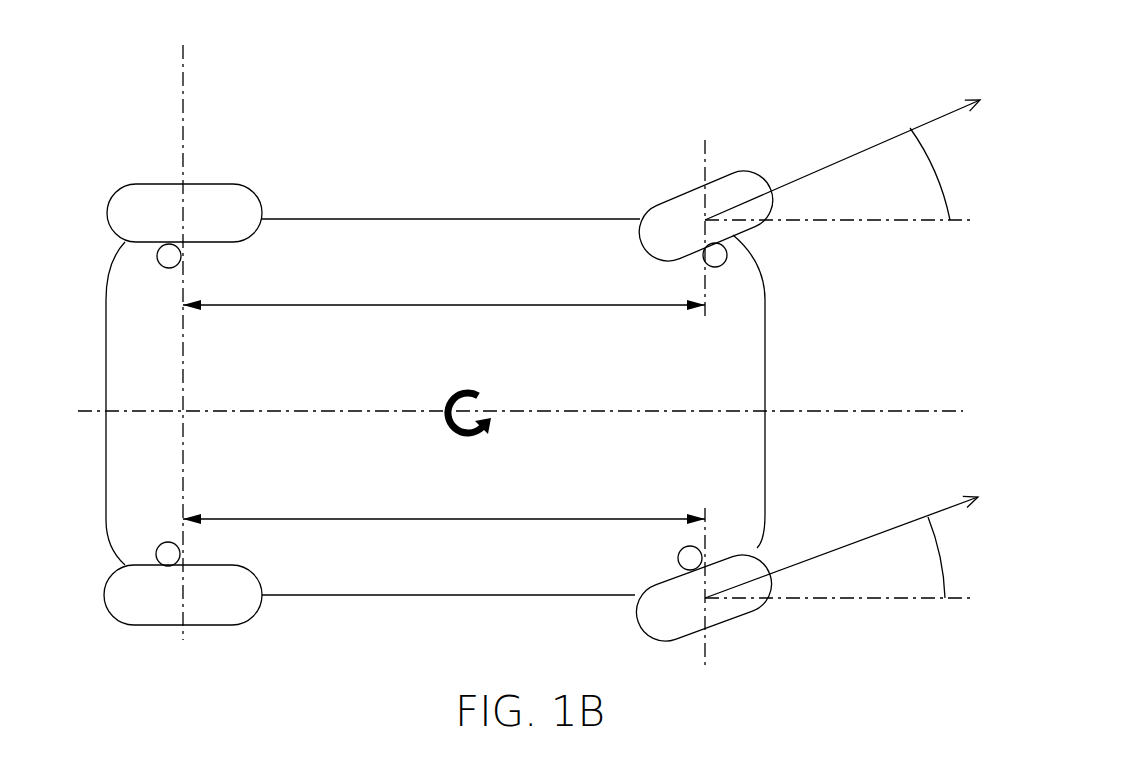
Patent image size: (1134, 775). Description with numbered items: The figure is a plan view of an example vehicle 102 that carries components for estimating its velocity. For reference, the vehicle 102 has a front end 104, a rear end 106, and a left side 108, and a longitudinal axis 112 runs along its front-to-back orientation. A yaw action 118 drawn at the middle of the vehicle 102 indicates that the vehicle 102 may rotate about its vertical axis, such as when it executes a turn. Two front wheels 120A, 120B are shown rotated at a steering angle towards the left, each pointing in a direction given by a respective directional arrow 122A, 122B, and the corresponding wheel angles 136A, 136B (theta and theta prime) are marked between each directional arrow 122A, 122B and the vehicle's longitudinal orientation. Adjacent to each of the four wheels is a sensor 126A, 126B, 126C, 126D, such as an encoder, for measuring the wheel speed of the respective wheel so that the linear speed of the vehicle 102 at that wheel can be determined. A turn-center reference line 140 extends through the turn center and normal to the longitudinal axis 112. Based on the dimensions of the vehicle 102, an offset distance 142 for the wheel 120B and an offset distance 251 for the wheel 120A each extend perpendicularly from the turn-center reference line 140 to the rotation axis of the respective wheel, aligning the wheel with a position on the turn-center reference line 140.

The vehicle 102 is at (591, 121).
The front end 104 is at (778, 388).
The rear end 106 is at (98, 280).
The left side 108 is at (464, 190).
The longitudinal axis 112 is at (243, 411).
The yaw action 118 is at (461, 389).
The wheel 120A is at (663, 645).
The wheel 120B is at (750, 165).
The directional arrow 122A is at (947, 505).
The directional arrow 122B is at (947, 117).
The sensor 126A is at (680, 565).
The sensor 126B is at (718, 267).
The sensor 126C is at (168, 547).
The sensor 126D is at (170, 268).
The wheel angle 136A is at (933, 535).
The wheel angle 136B is at (942, 147).
The turn-center reference line 140 is at (183, 92).
The offset distance 142 is at (290, 305).
The offset distance 251 is at (322, 522).